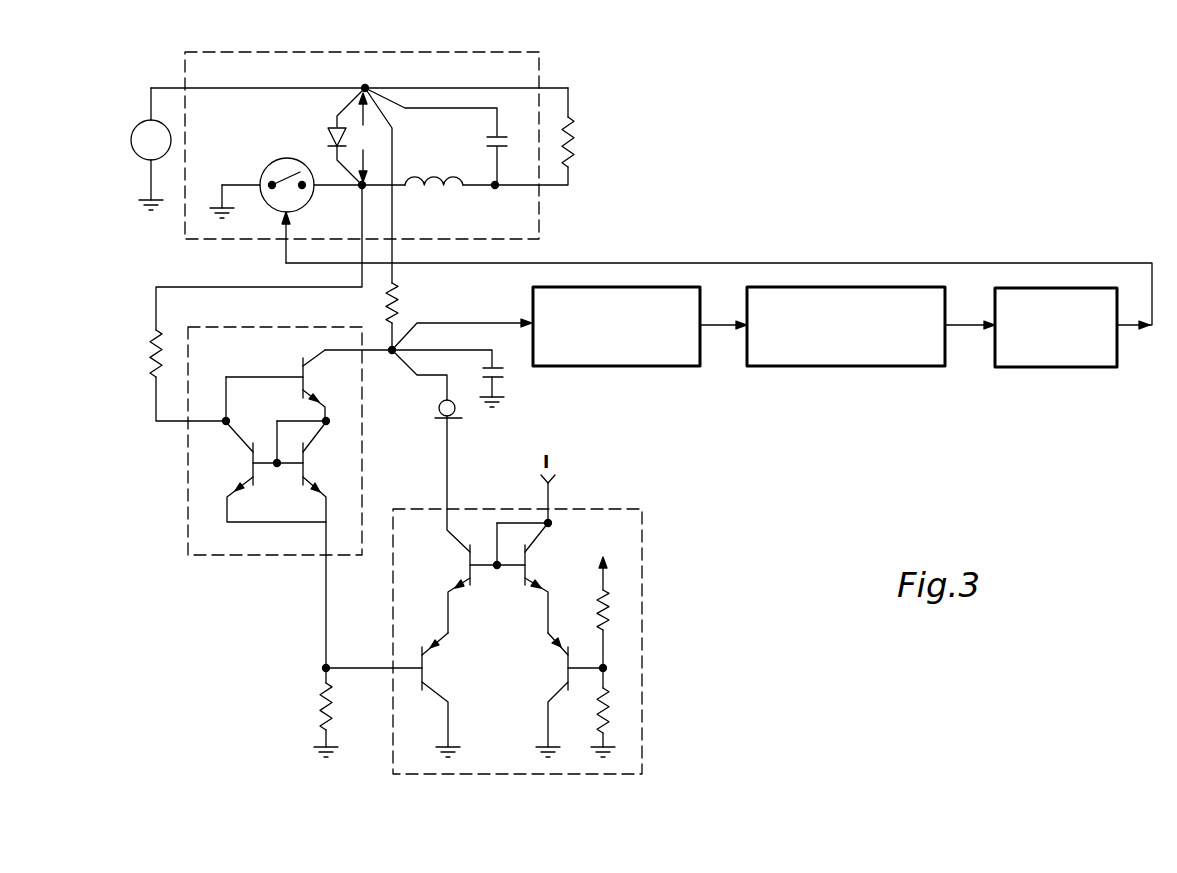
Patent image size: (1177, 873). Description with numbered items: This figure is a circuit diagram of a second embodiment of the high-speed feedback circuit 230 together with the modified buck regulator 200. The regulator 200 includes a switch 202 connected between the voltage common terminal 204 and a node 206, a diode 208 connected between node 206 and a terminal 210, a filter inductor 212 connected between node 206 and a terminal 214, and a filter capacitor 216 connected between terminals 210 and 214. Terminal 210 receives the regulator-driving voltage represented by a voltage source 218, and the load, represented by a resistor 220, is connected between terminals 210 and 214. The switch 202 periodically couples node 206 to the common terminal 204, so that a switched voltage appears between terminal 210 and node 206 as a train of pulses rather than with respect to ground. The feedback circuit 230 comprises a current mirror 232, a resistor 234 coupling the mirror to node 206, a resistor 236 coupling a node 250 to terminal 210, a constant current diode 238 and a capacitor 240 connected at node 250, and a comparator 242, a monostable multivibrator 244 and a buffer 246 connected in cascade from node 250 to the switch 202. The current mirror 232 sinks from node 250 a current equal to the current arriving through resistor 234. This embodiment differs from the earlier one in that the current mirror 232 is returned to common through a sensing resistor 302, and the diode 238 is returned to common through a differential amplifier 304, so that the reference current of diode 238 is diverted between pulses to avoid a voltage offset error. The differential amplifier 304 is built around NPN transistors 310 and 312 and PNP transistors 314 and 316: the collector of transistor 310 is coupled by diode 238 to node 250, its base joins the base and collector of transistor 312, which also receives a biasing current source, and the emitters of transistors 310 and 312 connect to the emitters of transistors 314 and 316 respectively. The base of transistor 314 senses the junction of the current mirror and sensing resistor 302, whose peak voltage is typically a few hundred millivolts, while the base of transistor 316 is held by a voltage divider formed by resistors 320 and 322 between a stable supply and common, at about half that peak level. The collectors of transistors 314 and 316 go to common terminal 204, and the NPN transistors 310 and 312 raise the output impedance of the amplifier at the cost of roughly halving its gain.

The modified buck regulator 200 is at (485, 52).
The switch 202 is at (283, 158).
The voltage common terminal 204 is at (151, 195).
The node 206 is at (360, 193).
The diode 208 is at (330, 133).
The terminal 210 is at (362, 86).
The filter inductor 212 is at (438, 190).
The terminal 214 is at (496, 190).
The filter capacitor 216 is at (486, 143).
The voltage source 218 is at (140, 128).
The resistor 220 is at (574, 138).
The high-speed feedback circuit 230 is at (283, 565).
The current mirror 232 is at (290, 313).
The resistor 234 is at (150, 356).
The resistor 236 is at (396, 293).
The field-effect constant current diode 238 is at (440, 410).
The capacitor 240 is at (500, 375).
The comparator 242 is at (638, 367).
The monostable multivibrator 244 is at (878, 367).
The buffer 246 is at (1058, 367).
The node 250 is at (388, 357).
The sensing resistor 302 is at (320, 710).
The differential amplifier 304 is at (642, 718).
The NPN transistor 310 is at (468, 565).
The NPN transistor 312 is at (522, 578).
The PNP transistor 314 is at (424, 670).
The PNP transistor 316 is at (566, 668).
The resistor 320 is at (603, 615).
The resistor 322 is at (598, 707).